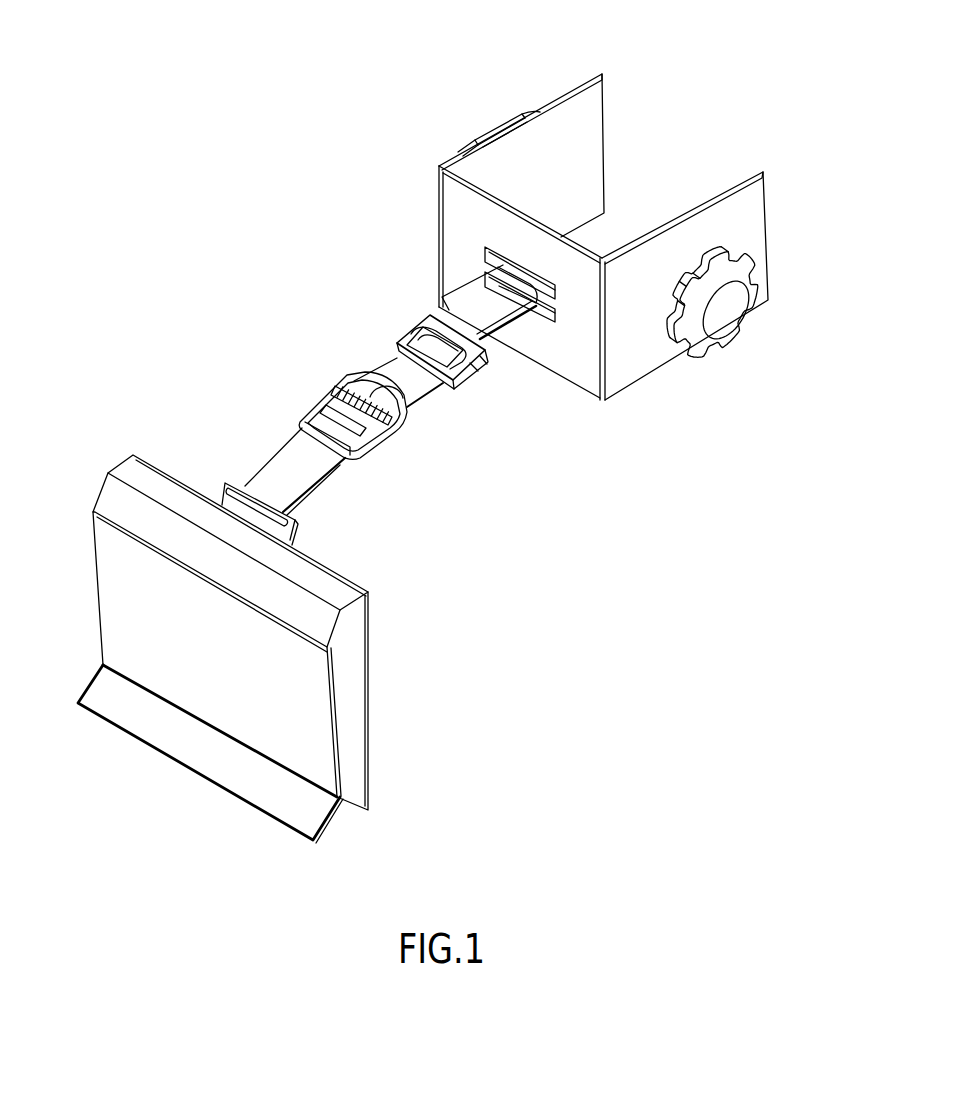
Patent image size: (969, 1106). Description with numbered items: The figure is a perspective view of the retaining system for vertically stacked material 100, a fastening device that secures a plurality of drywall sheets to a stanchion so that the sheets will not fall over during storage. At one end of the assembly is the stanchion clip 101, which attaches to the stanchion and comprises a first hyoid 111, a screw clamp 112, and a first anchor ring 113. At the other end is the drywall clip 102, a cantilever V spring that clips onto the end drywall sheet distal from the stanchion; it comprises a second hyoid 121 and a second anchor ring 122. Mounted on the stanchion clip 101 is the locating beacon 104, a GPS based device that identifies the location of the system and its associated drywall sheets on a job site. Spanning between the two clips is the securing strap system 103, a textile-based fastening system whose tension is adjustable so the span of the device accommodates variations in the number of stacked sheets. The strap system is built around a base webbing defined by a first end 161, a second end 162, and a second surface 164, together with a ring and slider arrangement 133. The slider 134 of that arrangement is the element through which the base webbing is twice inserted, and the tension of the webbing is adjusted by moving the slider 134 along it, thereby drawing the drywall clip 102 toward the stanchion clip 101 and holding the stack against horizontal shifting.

The retaining system for vertically stacked material 100 is at (118, 80).
The stanchion clip 101 is at (604, 77).
The drywall clip 102 is at (318, 847).
The securing strap system 103 is at (261, 345).
The locating beacon 104 is at (491, 131).
The first hyoid 111 is at (757, 203).
The screw clamp 112 is at (738, 310).
The first anchor ring 113 is at (554, 285).
The second hyoid 121 is at (368, 717).
The second anchor ring 122 is at (300, 542).
The ring and slider arrangement 133 is at (392, 432).
The slider 134 is at (476, 370).
The first end 161 is at (352, 447).
The second end 162 is at (434, 388).
The second surface 164 is at (408, 378).